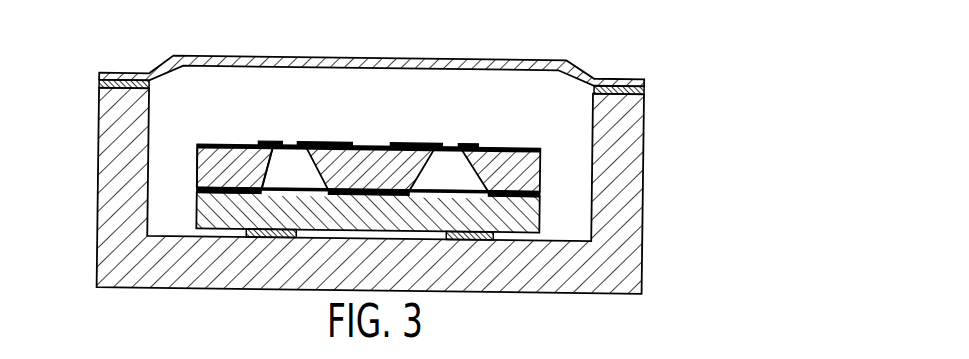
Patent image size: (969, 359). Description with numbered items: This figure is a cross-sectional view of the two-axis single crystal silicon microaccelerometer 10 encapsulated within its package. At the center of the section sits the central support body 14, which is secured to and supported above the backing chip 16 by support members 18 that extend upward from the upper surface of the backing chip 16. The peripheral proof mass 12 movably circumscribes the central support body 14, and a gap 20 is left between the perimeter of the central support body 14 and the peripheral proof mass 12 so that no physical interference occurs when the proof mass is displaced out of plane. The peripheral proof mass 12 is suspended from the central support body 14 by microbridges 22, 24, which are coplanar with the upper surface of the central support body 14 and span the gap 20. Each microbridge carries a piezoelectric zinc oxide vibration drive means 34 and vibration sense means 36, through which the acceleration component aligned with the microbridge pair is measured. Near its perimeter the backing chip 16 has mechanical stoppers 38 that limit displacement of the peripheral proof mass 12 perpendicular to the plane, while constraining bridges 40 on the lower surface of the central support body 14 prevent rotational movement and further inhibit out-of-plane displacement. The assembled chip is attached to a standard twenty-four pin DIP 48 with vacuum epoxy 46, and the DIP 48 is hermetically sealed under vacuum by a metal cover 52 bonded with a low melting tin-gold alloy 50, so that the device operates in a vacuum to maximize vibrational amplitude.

The microaccelerometer 10 is at (140, 46).
The peripheral proof mass 12 is at (518, 148).
The central support body 14 is at (363, 145).
The backing chip 16 is at (540, 217).
The support members 18 is at (375, 168).
The gap 20 is at (260, 168).
The microbridge 22 is at (283, 143).
The microbridge 24 is at (450, 147).
The vibration drive means 34 is at (262, 142).
The vibration sense means 36 is at (330, 143).
The mechanical stoppers 38 is at (198, 191).
The constraining bridges 40 is at (270, 180).
The vacuum epoxy 46 is at (263, 240).
The DIP 48 is at (115, 258).
The tin-gold alloy 50 is at (100, 87).
The metal cover 52 is at (280, 57).